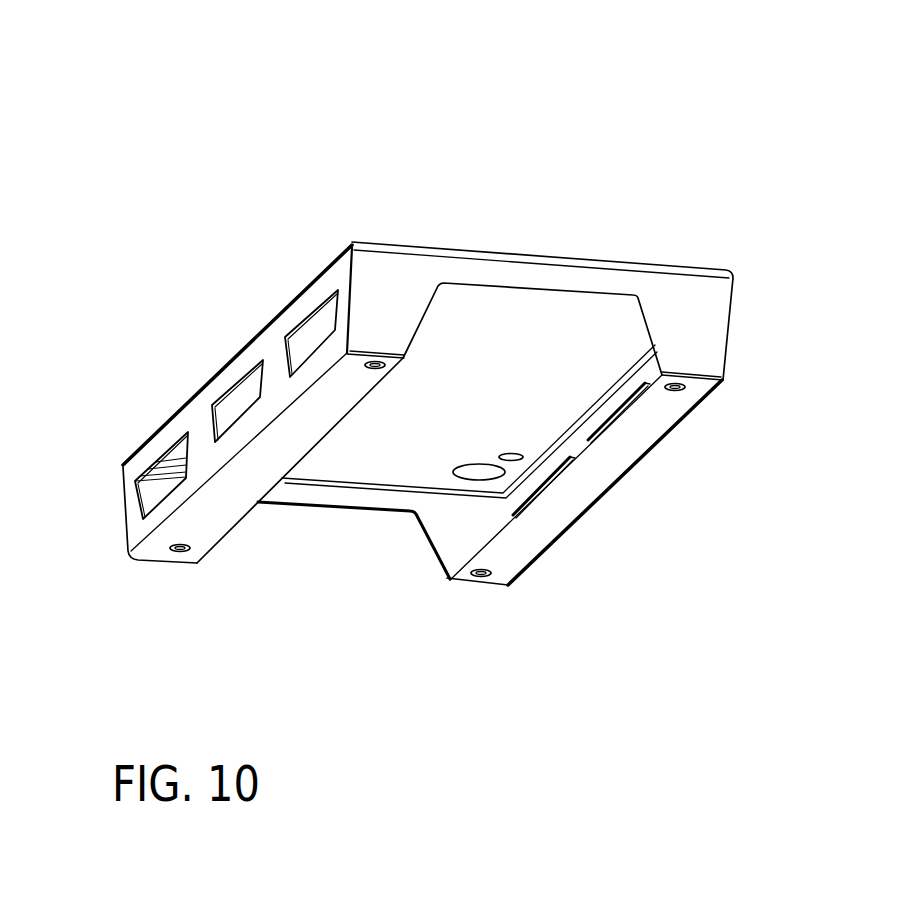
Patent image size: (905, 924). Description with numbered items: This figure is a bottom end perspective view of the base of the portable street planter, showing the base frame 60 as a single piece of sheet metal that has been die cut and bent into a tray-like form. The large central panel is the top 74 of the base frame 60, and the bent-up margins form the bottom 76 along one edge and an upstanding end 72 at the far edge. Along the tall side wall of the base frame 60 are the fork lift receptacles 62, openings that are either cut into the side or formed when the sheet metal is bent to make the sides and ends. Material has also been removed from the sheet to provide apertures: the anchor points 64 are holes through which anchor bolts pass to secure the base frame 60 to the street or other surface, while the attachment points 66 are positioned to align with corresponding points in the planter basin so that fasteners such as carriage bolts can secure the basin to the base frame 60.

The base frame 60 is at (207, 133).
The fork lift receptacles 62 is at (148, 490).
The anchor points 64 is at (483, 578).
The attachment points 66 is at (510, 452).
The ends 72 is at (687, 298).
The top 74 is at (385, 448).
The bottom 76 is at (545, 527).